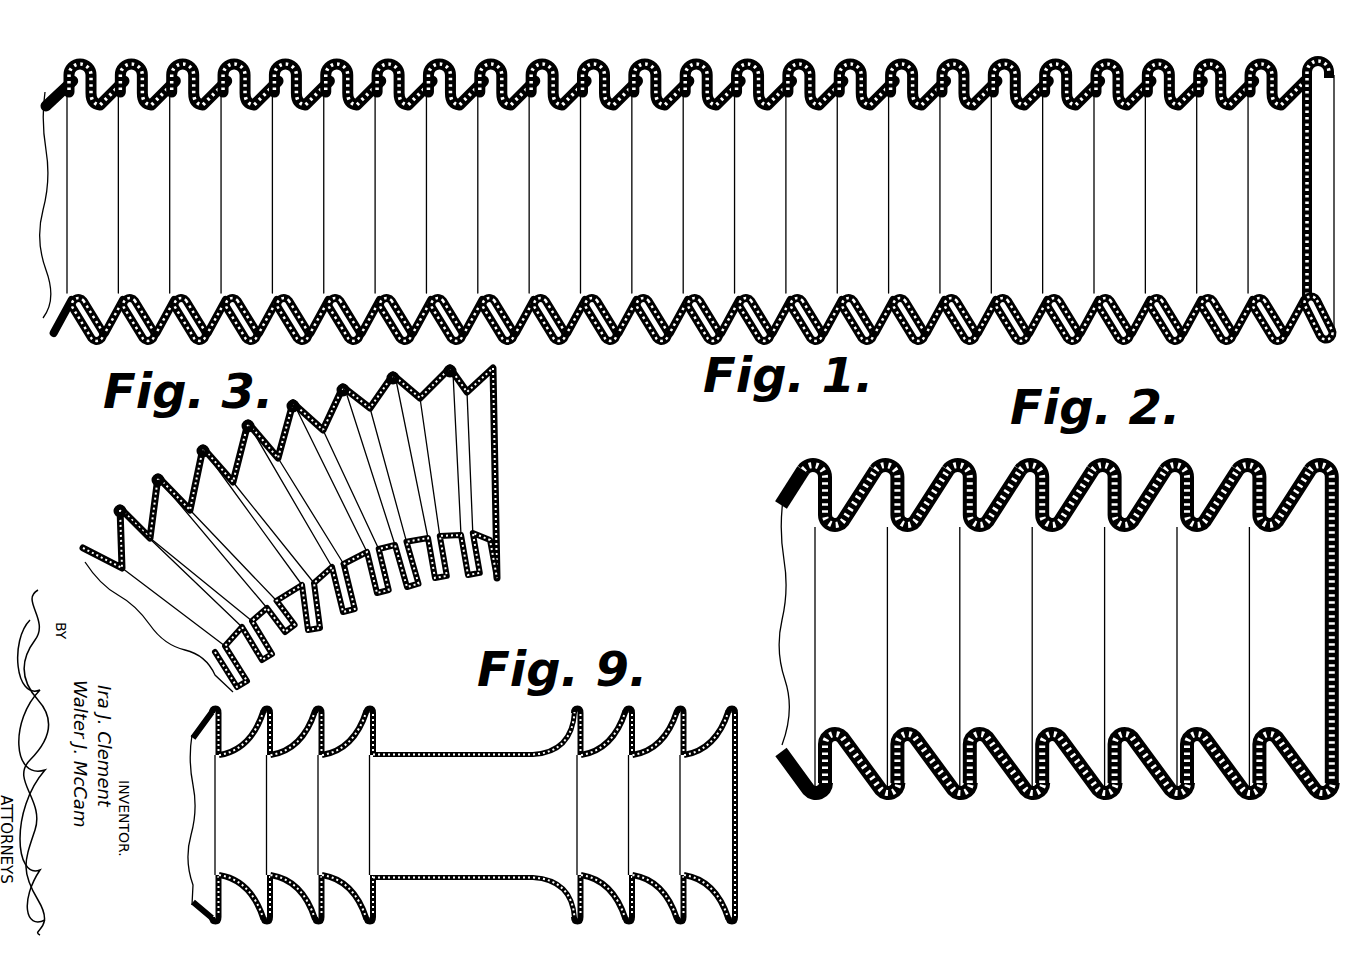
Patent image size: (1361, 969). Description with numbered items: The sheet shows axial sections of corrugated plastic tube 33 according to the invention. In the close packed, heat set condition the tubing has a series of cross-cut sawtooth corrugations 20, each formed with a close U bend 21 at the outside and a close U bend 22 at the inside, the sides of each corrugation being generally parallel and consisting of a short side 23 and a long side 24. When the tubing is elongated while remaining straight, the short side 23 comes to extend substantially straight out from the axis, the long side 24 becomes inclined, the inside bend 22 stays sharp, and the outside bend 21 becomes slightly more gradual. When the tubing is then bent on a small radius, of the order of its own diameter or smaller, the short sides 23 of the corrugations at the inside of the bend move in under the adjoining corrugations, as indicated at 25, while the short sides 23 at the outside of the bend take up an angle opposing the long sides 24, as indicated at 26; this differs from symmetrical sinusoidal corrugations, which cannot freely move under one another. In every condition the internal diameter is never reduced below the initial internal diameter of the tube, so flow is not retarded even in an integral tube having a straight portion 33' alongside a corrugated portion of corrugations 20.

In FIG. 1, the corrugations 20 is at (1047, 82).
In FIG. 2, the corrugations 20 is at (962, 800).
In FIG. 3, the corrugations 20 is at (428, 592).
In FIG. 9, the corrugations 20 is at (270, 707).
In FIG. 1, the outside U bends 21 is at (1162, 60).
In FIG. 2, the outside U bends 21 is at (1180, 460).
In FIG. 1, the inside U bends 22 is at (1058, 100).
In FIG. 2, the inside U bends 22 is at (1117, 530).
In FIG. 1, the short side 23 is at (1092, 303).
In FIG. 2, the short side 23 is at (1042, 472).
In FIG. 3, the short side 23 is at (287, 594).
In FIG. 1, the long side 24 is at (1130, 300).
In FIG. 2, the long side 24 is at (1003, 490).
In FIG. 3, the long side 24 is at (333, 414).
In FIG. 3, the short sides moved in under adjoining corrugations 25 is at (320, 612).
In FIG. 3, the short sides at opposing angle 26 is at (350, 392).
In FIG. 1, the plastic tube 33 is at (609, 221).
In FIG. 2, the plastic tube 33 is at (923, 605).
In FIG. 9, the straight portion 33' is at (474, 813).